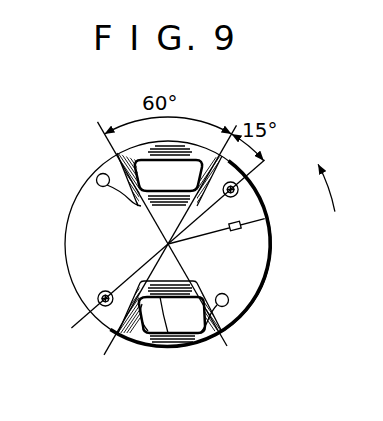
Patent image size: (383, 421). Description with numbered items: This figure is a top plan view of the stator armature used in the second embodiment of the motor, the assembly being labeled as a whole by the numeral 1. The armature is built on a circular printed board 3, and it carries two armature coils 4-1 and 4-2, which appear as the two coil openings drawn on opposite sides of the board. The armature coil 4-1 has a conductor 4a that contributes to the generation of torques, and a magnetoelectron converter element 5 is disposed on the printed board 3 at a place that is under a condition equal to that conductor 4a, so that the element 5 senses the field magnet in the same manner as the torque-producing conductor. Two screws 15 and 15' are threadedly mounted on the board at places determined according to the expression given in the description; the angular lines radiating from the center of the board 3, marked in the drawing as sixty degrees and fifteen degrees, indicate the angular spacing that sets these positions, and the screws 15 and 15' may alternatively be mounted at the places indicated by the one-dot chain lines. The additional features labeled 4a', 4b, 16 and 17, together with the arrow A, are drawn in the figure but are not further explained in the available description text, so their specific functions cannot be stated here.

The apparatus 1 is at (99, 153).
The printed board 3 is at (268, 281).
The armature coil 4-1 is at (192, 135).
The armature coil 4-2 is at (160, 345).
The conductor 4a is at (156, 256).
The inclined surface 4a' is at (194, 259).
The projection 4b is at (177, 337).
The magnetoelectron converter element 5 is at (265, 219).
The screw 15 is at (187, 244).
The screw 15' is at (86, 329).
The lever 16 is at (229, 300).
The lever 17 is at (92, 175).
The rotation direction A is at (330, 203).